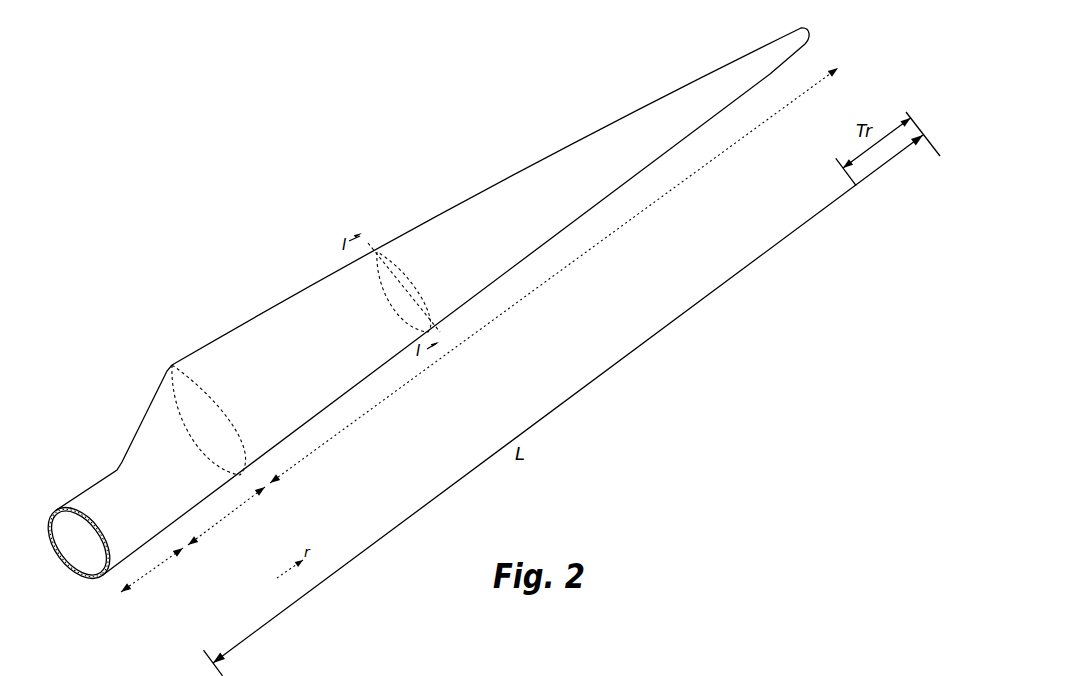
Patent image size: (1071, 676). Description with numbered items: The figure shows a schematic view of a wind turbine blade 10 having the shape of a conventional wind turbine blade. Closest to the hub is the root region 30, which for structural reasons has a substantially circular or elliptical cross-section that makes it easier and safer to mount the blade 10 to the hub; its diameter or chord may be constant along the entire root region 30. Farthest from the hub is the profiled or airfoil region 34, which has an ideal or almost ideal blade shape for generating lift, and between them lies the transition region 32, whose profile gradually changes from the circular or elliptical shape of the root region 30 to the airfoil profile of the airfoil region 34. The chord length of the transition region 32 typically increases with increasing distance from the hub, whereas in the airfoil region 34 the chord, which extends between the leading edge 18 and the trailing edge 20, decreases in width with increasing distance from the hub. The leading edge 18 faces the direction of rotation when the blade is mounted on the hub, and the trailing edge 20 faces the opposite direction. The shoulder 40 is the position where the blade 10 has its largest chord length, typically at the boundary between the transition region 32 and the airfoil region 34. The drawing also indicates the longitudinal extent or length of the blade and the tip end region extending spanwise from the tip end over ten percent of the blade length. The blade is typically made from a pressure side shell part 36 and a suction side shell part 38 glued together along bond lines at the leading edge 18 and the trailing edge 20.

The wind turbine blade 10 is at (298, 202).
The leading edge 18 is at (577, 222).
The trailing edge 20 is at (426, 238).
The root region 30 is at (157, 568).
The transition region 32 is at (230, 513).
The airfoil region 34 is at (495, 318).
The pressure side shell part 36 is at (81, 507).
The suction side shell part 38 is at (47, 510).
The shoulder 40 is at (172, 365).